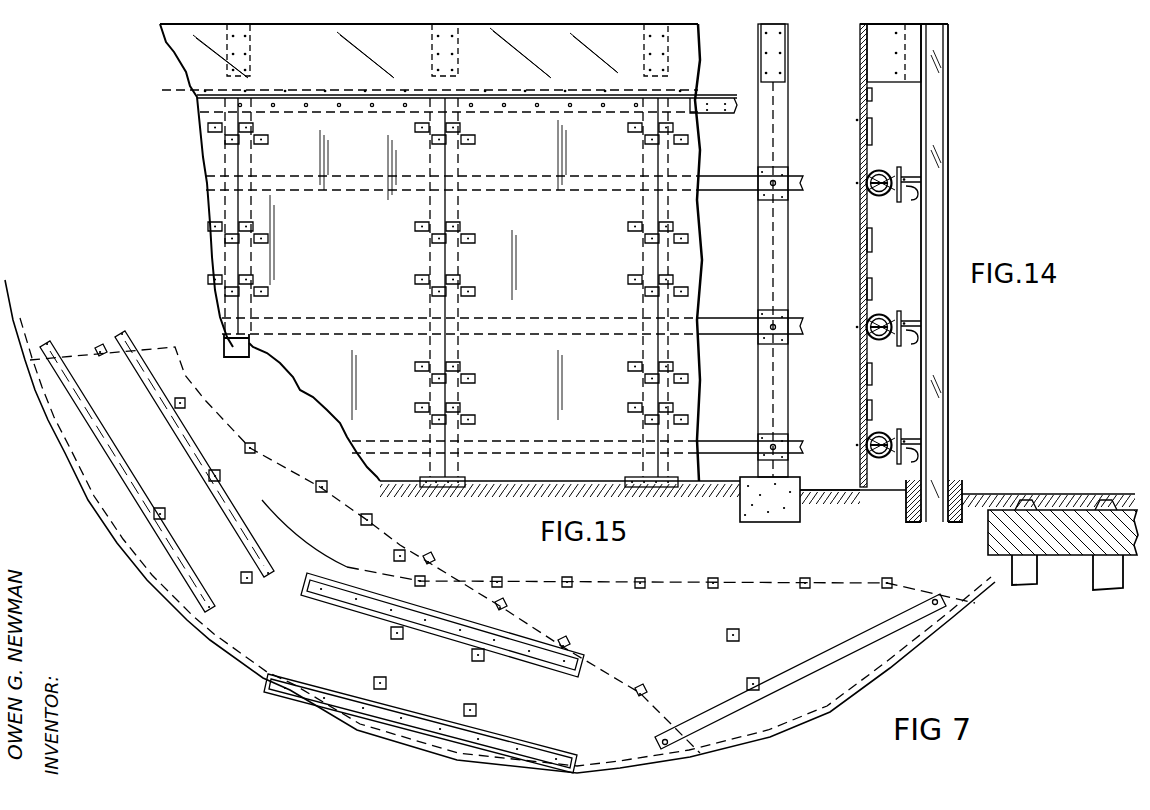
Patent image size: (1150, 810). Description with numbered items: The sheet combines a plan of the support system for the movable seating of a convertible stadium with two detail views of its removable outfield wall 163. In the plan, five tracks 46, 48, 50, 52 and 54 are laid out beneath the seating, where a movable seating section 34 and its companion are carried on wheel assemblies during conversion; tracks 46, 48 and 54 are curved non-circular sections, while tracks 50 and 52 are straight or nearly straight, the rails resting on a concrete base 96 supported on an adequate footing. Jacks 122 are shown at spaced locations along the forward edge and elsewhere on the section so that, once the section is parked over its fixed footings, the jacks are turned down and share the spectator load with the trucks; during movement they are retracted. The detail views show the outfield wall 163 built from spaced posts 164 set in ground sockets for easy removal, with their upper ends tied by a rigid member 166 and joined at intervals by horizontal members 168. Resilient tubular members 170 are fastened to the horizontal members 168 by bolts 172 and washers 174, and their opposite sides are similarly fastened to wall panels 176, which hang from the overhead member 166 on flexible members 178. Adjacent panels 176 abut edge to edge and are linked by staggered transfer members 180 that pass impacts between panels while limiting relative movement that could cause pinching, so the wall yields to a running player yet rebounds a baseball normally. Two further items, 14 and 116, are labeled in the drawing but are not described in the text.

In FIG. 14, the wall form 14 is at (860, 73).
In FIG. 7, the movable seating section 34 is at (391, 541).
In FIG. 7, the track 46 is at (183, 566).
In FIG. 7, the track 48 is at (238, 528).
In FIG. 7, the track 50 is at (400, 720).
In FIG. 7, the track 52 is at (443, 632).
In FIG. 14, the track 54 is at (1055, 491).
In FIG. 7, the track 54 is at (832, 665).
In FIG. 7, the base 96 is at (515, 640).
In FIG. 7, the inner rail strip 116 is at (490, 738).
In FIG. 7, the jacks 122 is at (252, 446).
In FIG. 15, the outfield wall 163 is at (196, 169).
In FIG. 14, the outfield wall 163 is at (951, 171).
In FIG. 14, the posts 164 is at (935, 412).
In FIG. 15, the rigid member 166 is at (334, 40).
In FIG. 14, the rigid member 166 is at (875, 53).
In FIG. 14, the horizontal members 168 is at (926, 197).
In FIG. 15, the resilient tubular members 170 is at (453, 178).
In FIG. 14, the resilient tubular members 170 is at (878, 170).
In FIG. 14, the bolts 172 is at (897, 174).
In FIG. 14, the washers 174 is at (891, 198).
In FIG. 15, the wall panels 176 is at (421, 270).
In FIG. 14, the wall panels 176 is at (859, 270).
In FIG. 15, the flexible members 178 is at (708, 95).
In FIG. 14, the flexible members 178 is at (872, 100).
In FIG. 15, the transfer members 180 is at (462, 282).
In FIG. 14, the transfer members 180 is at (866, 238).